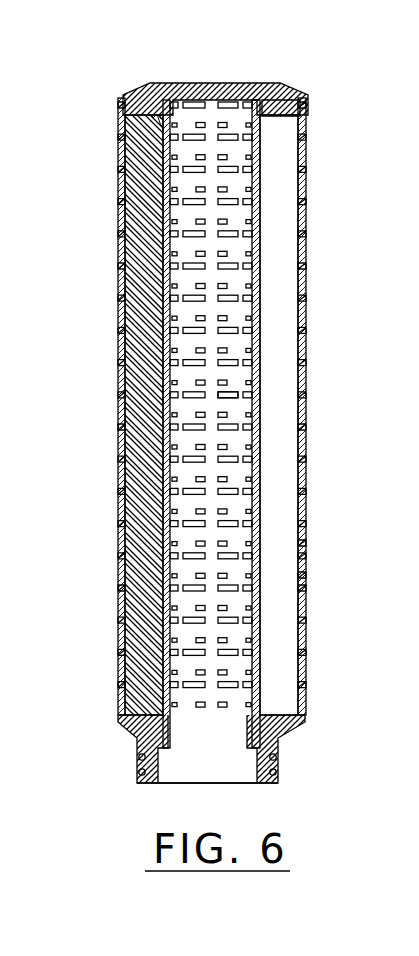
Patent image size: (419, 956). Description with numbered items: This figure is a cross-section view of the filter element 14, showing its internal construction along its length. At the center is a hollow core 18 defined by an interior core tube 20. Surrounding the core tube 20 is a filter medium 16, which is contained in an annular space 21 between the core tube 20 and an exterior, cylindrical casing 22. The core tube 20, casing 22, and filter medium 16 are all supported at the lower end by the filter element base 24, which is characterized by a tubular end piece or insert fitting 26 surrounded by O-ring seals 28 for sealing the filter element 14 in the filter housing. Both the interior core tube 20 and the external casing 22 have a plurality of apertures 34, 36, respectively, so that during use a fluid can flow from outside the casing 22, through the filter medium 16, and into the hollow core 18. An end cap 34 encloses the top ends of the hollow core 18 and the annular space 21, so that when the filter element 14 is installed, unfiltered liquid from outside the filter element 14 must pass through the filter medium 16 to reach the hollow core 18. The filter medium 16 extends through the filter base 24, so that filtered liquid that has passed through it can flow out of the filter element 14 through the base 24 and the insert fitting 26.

The filter element 14 is at (118, 80).
The filter medium 16 is at (287, 230).
The hollow core 18 is at (240, 416).
The core tube 20 is at (263, 310).
The annular space 21 is at (283, 112).
The casing 22 is at (306, 172).
The filter element base 24 is at (118, 744).
The insert fitting 26 is at (147, 785).
The O-ring seals 28 is at (138, 773).
The apertures 34 is at (243, 84).
The apertures 36 is at (298, 570).